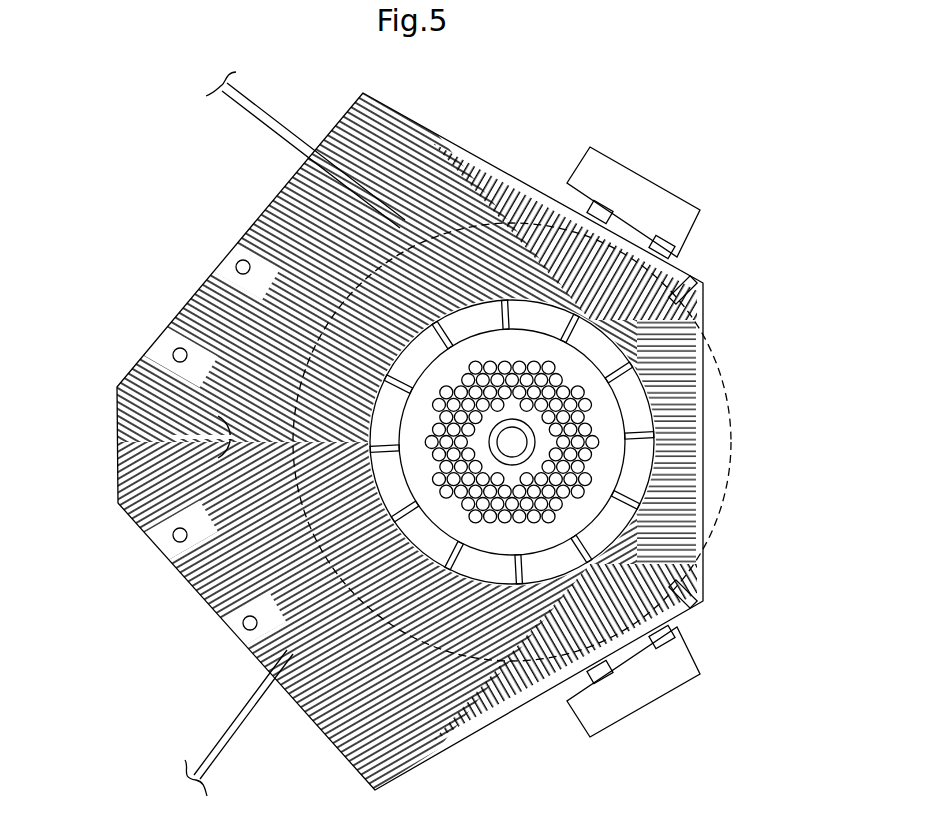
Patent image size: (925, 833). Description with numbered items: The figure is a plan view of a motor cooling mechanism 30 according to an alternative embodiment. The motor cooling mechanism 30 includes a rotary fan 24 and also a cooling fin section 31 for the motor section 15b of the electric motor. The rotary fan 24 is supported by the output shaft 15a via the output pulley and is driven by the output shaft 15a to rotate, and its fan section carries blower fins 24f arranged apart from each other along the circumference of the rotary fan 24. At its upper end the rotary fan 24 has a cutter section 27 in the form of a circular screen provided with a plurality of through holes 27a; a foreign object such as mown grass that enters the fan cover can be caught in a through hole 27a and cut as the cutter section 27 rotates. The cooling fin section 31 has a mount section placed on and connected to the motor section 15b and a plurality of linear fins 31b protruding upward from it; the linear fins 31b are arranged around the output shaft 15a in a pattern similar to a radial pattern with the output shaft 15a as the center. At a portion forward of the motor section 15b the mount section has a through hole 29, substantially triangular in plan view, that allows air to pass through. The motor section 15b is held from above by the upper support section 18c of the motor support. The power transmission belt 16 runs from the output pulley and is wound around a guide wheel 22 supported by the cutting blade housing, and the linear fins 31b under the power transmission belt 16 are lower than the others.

The power transmission belt 16 is at (280, 132).
The guide wheel 22 is at (450, 727).
The motor cooling mechanism 30 is at (442, 424).
The cooling fin section 31 is at (455, 140).
The linear fins 31b is at (540, 212).
The through hole 29 is at (180, 455).
The upper support section 18c is at (640, 215).
The blower fins 24f is at (632, 330).
The cutter section 27 is at (600, 402).
The through holes 27a is at (567, 482).
The output shaft 15a is at (513, 442).
The motor section 15b is at (731, 443).
The rotary fan 24 is at (585, 470).